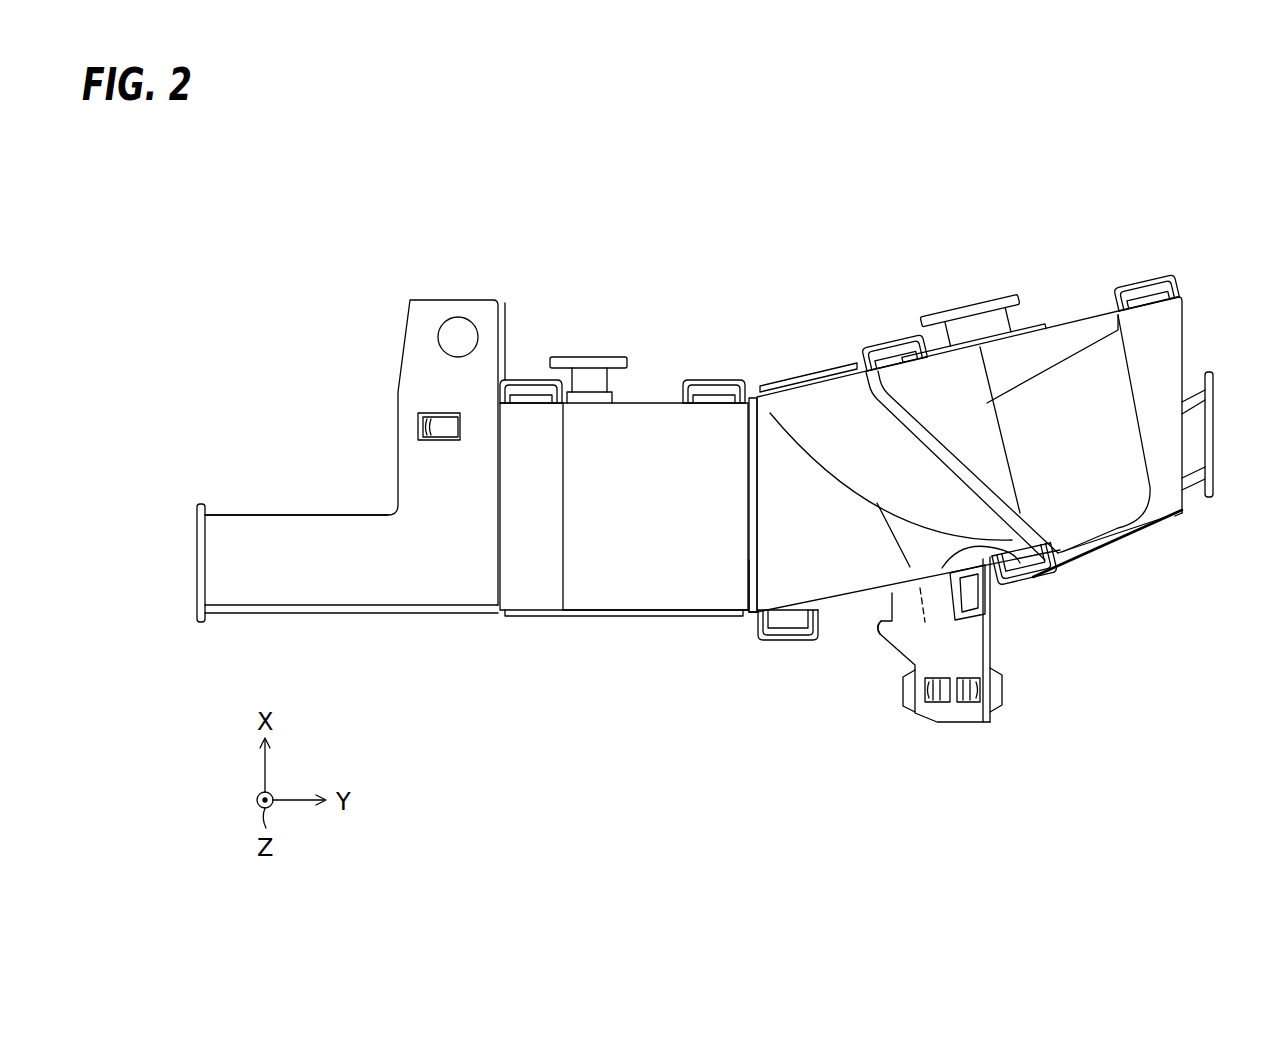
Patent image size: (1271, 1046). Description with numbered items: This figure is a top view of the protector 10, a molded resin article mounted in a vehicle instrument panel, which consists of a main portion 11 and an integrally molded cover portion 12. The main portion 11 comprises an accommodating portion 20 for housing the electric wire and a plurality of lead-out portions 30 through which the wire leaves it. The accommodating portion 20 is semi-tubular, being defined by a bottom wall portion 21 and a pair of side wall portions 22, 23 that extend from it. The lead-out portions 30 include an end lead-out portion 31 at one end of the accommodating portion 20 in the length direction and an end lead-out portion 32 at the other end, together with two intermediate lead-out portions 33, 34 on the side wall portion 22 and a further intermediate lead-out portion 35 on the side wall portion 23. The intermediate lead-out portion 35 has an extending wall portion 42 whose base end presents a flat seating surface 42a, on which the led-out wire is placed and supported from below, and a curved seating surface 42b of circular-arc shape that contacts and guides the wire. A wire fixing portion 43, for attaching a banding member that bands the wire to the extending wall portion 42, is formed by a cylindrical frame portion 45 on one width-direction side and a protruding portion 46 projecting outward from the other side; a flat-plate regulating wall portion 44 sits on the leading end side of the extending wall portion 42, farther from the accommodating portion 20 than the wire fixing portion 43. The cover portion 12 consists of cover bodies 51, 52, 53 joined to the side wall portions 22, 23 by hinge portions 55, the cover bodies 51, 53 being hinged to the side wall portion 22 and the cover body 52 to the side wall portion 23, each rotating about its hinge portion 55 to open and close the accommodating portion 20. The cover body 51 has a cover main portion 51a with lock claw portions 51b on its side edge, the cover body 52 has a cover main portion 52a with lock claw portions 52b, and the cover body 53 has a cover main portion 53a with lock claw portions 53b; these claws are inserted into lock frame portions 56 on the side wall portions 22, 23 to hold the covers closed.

The protector 10 is at (380, 280).
The main portion 11 is at (437, 590).
The cover portion 12 is at (525, 610).
The accommodating portion 20 is at (960, 465).
The bottom wall portion 21 is at (751, 486).
The side wall portion 22 is at (726, 494).
The side wall portion 23 is at (755, 614).
The lead-out portions 30 is at (711, 476).
The end lead-out portion 31 is at (244, 512).
The end lead-out portion 32 is at (1188, 497).
The intermediate lead-out portion 33 is at (586, 362).
The intermediate lead-out portion 34 is at (973, 302).
The intermediate lead-out portion 35 is at (993, 690).
The extending wall portion 42 is at (946, 628).
The flat seating surface 42a is at (896, 594).
The curved seating surface 42b is at (917, 585).
The wire fixing portion 43 is at (972, 562).
The regulating wall portion 44 is at (991, 660).
The cylindrical frame portion 45 is at (1012, 545).
The protruding portion 46 is at (884, 636).
The cover body 51 is at (624, 497).
The cover main portion 51a is at (595, 600).
The lock claw portions 51b is at (527, 395).
The cover body 52 is at (783, 384).
The cover main portion 52a is at (760, 580).
The lock claw portions 52b is at (796, 640).
The cover body 53 is at (1142, 525).
The cover main portion 53a is at (1080, 322).
The lock claw portions 53b is at (878, 350).
The hinge portions 55 is at (655, 618).
The lock frame portions 56 is at (500, 390).